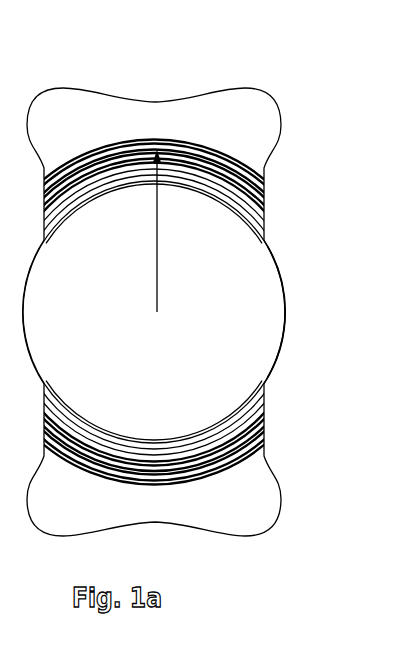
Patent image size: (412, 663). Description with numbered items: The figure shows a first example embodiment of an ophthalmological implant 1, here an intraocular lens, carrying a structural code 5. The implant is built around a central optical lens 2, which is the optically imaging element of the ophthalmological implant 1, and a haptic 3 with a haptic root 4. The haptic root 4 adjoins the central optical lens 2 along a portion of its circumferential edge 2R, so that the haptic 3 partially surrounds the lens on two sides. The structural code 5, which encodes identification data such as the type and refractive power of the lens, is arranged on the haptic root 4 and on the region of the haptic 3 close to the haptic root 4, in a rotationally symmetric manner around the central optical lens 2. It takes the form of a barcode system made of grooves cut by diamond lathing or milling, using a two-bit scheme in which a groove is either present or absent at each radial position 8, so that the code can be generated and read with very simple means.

The ophthalmological implant 1 is at (180, 65).
The haptic 3 is at (232, 125).
The central optical lens 2 is at (230, 290).
The circumferential edge 2R is at (285, 325).
The haptic root 4 is at (250, 412).
The structural code 5 is at (255, 448).
The radial position 8 is at (173, 232).